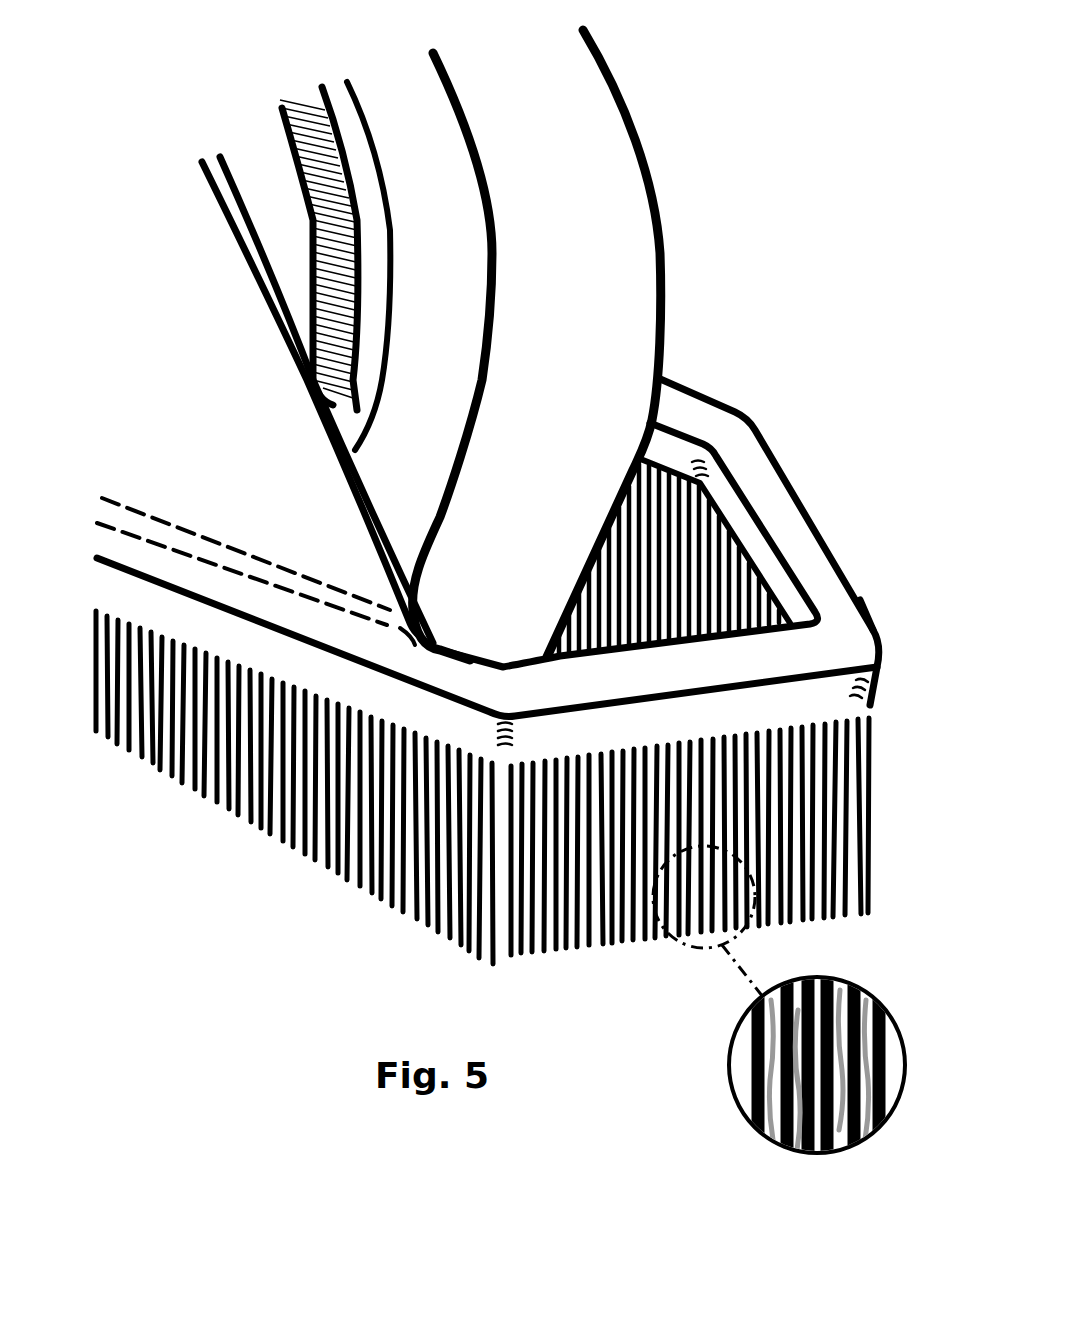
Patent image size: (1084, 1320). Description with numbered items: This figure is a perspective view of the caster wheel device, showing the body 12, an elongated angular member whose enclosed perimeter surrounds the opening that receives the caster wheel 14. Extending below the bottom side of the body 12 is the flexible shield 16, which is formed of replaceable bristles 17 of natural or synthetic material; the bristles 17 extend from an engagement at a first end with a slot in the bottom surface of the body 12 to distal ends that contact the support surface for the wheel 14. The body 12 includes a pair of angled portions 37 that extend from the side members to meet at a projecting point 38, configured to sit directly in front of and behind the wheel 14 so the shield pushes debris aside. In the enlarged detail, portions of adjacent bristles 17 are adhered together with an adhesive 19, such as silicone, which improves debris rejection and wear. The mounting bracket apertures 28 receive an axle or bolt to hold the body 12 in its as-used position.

The body 12 is at (747, 418).
The caster wheel 14 is at (617, 208).
The flexible shield 16 is at (548, 948).
The bristles 17 is at (440, 925).
The adhesive 19 is at (868, 1097).
The apertures 28 is at (227, 375).
The angled portions 37 is at (780, 510).
The projecting point 38 is at (843, 597).